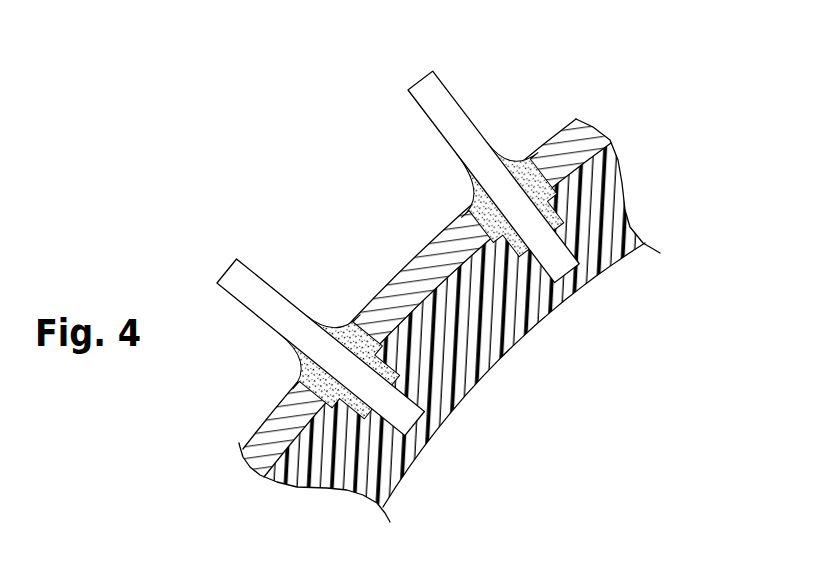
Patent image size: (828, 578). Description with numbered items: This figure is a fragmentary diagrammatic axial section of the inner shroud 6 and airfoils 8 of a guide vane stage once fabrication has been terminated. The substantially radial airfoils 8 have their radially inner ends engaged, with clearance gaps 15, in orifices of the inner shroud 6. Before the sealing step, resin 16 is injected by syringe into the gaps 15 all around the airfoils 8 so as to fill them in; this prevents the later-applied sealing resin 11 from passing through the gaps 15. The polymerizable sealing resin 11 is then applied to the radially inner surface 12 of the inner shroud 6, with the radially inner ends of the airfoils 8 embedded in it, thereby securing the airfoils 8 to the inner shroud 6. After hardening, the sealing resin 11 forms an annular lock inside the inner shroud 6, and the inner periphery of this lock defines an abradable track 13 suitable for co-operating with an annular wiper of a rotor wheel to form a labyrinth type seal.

The inner shroud 6 is at (275, 453).
The airfoils 8 is at (437, 102).
The sealing resin 11 is at (462, 360).
The radially inner surface 12 is at (588, 178).
The abradable track 13 is at (538, 337).
The gaps 15 is at (527, 176).
The resin 16 is at (473, 193).